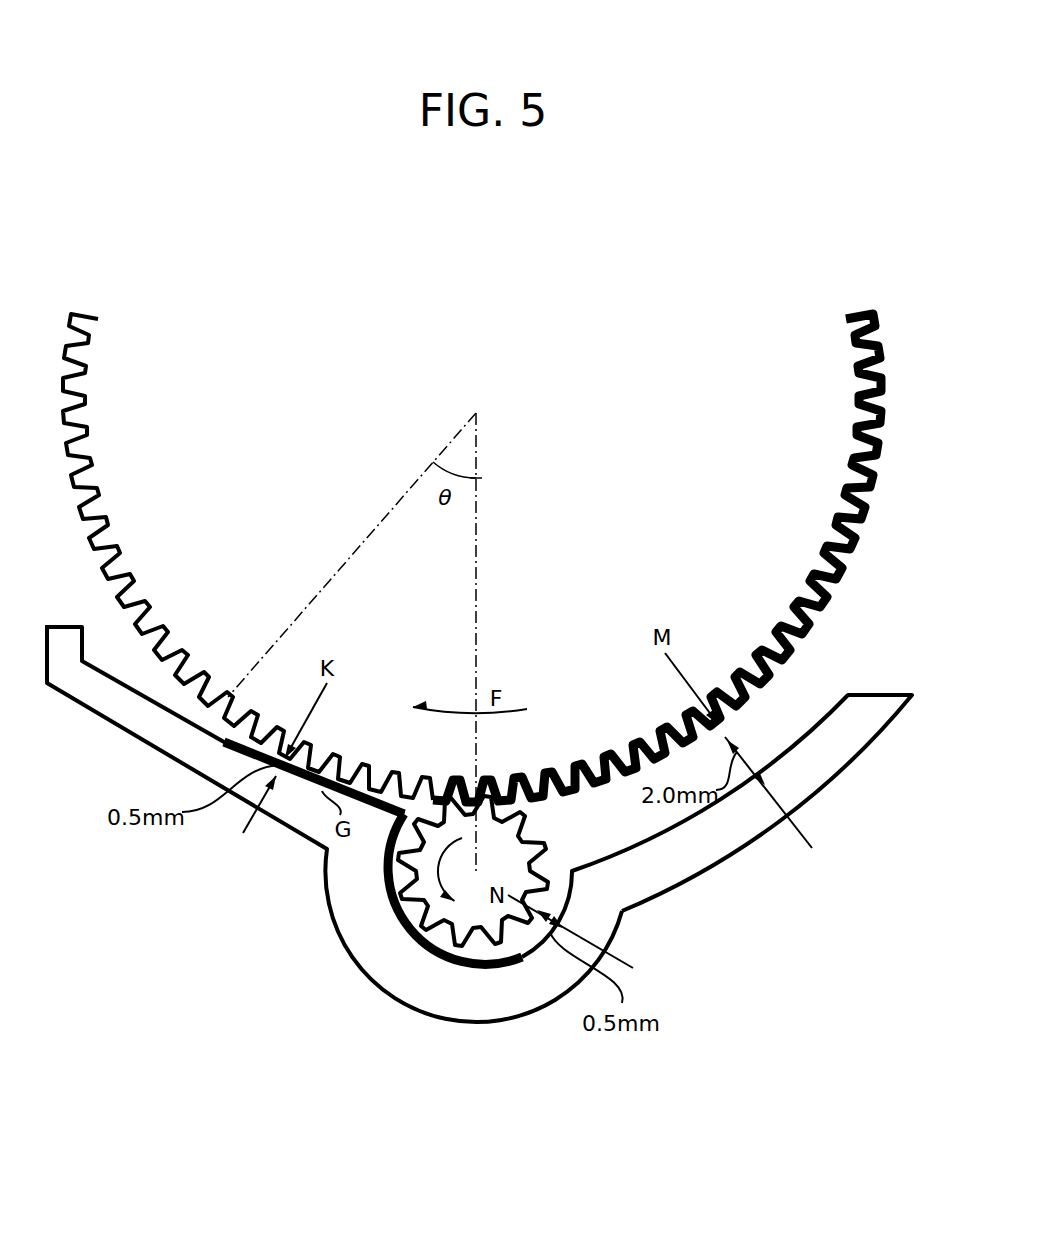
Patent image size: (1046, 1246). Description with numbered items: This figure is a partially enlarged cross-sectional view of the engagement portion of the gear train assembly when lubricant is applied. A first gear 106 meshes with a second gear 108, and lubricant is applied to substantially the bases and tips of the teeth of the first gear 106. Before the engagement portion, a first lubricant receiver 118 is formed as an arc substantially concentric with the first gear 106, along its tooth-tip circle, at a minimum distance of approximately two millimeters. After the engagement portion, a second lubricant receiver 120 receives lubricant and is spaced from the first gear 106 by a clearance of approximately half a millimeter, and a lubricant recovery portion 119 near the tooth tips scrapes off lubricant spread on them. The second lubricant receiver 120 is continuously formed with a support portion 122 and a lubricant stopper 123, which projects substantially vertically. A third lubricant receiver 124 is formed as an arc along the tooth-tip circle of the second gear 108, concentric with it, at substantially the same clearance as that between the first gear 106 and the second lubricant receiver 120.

The first gear 106 is at (797, 523).
The second gear 108 is at (517, 863).
The first lubricant receiver 118 is at (832, 711).
The lubricant recovery portion 119 is at (387, 824).
The second lubricant receiver 120 is at (237, 745).
The support portion 122 is at (128, 686).
The lubricant stopper 123 is at (70, 626).
The third lubricant receiver 124 is at (508, 971).